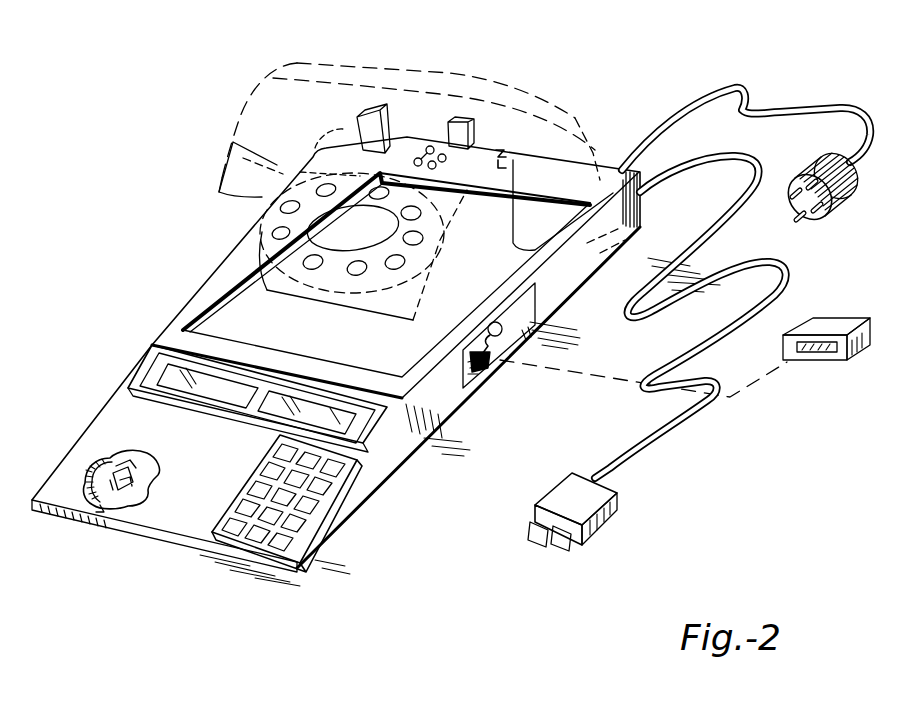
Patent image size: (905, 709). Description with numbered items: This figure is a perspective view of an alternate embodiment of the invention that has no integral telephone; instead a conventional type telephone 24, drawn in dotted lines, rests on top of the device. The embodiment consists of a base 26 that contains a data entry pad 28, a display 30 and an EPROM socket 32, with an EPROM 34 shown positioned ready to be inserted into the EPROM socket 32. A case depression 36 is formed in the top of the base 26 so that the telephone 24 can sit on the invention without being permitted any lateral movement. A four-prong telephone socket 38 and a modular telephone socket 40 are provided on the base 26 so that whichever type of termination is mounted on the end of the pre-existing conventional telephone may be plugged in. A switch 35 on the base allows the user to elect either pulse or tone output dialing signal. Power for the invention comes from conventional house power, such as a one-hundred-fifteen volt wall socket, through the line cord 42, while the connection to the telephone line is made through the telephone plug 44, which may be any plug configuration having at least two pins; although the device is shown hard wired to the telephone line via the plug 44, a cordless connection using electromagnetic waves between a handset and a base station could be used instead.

The conventional type telephone 24 is at (265, 238).
The base 26 is at (382, 460).
The data entry pad 28 is at (270, 540).
The display 30 is at (157, 345).
The EPROM socket 32 is at (480, 377).
The EPROM 34 is at (810, 358).
The switch 35 is at (103, 512).
The case depression 36 is at (228, 290).
The four-prong telephone socket 38 is at (438, 140).
The modular telephone socket 40 is at (503, 175).
The line cord 42 is at (586, 528).
The telephone plug 44 is at (840, 200).